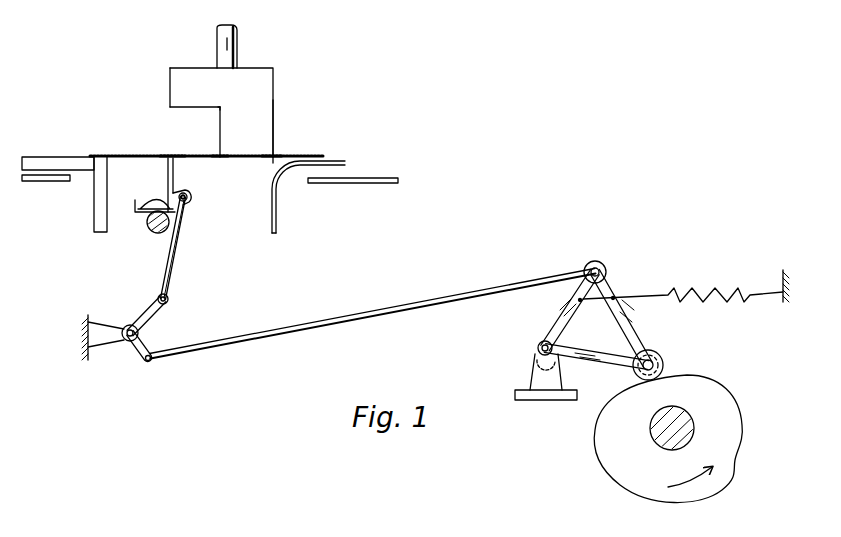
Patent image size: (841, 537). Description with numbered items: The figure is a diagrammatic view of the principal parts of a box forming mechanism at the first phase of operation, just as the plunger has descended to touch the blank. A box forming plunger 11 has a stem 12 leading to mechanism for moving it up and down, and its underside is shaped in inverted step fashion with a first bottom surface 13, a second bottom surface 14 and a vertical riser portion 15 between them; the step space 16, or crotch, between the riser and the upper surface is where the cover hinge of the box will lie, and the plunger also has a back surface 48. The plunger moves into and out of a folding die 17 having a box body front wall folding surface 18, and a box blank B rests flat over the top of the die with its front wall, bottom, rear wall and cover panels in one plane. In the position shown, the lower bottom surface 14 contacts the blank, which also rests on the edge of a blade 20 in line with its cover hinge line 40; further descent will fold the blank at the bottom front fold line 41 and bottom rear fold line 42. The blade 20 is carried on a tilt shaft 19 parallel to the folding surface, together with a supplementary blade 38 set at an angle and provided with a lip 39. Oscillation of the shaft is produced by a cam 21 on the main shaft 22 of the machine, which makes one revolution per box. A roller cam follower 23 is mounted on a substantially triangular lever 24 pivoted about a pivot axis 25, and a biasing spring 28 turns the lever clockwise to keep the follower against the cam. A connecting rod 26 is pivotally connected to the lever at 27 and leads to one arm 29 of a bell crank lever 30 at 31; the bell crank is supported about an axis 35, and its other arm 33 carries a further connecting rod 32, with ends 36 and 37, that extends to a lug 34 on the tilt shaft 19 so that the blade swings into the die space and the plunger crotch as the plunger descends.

The box forming plunger 11 is at (273, 80).
The stem 12 is at (233, 48).
The first bottom surface 13 is at (185, 108).
The second bottom surface 14 is at (273, 150).
The vertical riser portion 15 is at (221, 129).
The step space 16 is at (221, 109).
The folding die 17 is at (274, 220).
The box body front wall folding surface 18 is at (276, 232).
The tilt shaft 19 is at (155, 235).
The blade 20 is at (188, 164).
The cam 21 is at (648, 487).
The main shaft 22 is at (660, 437).
The cam follower 23 is at (662, 360).
The triangular lever 24 is at (584, 366).
The pivot axis 25 is at (538, 350).
The connecting rod 26 is at (365, 318).
The pivotal connection 27 is at (603, 268).
The biasing spring 28 is at (718, 288).
The arm 29 is at (135, 350).
The bell crank lever 30 is at (143, 333).
The connection point 31 is at (150, 366).
The connecting rod 32 is at (176, 258).
The arm 33 is at (150, 305).
The lug 34 is at (190, 194).
The axis 35 is at (118, 322).
The connecting rod end 36 is at (168, 300).
The connecting rod end 37 is at (187, 202).
The supplementary blade 38 is at (158, 205).
The lip 39 is at (137, 205).
The cover hinge line 40 is at (168, 156).
The bottom front fold line 41 is at (270, 161).
The bottom rear fold line 42 is at (219, 162).
The back surface 48 is at (170, 83).
The box blank B is at (300, 155).